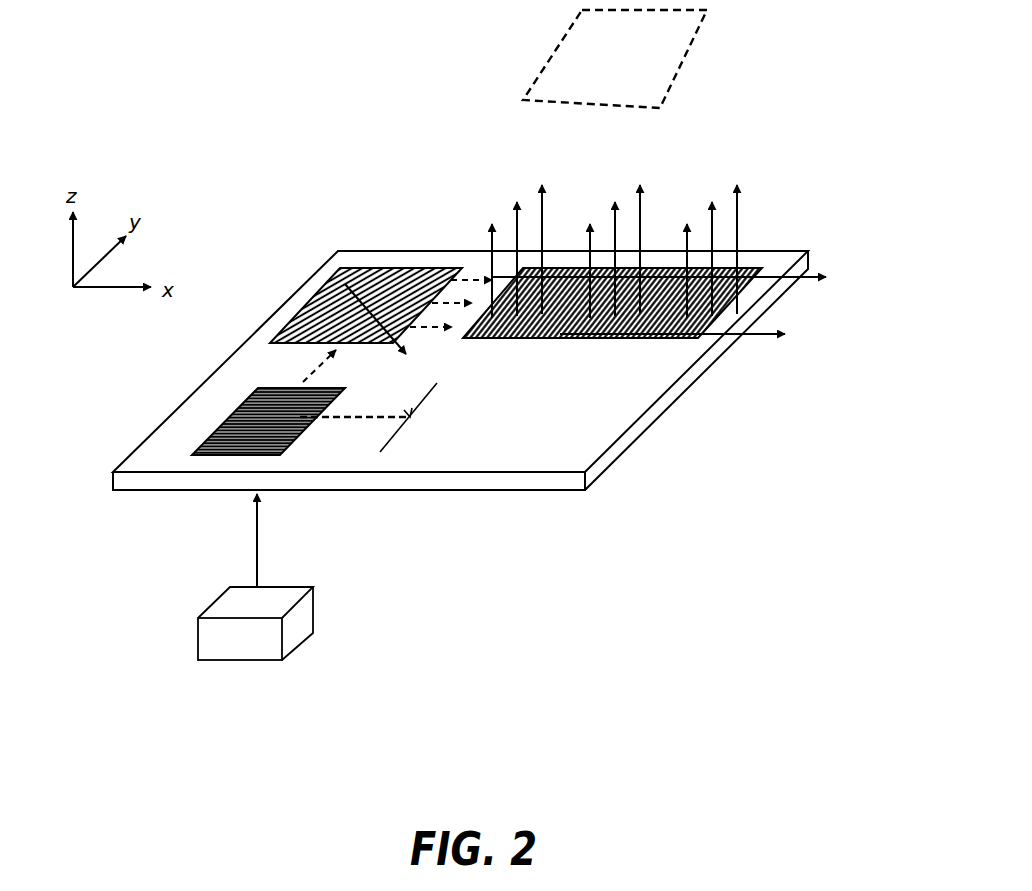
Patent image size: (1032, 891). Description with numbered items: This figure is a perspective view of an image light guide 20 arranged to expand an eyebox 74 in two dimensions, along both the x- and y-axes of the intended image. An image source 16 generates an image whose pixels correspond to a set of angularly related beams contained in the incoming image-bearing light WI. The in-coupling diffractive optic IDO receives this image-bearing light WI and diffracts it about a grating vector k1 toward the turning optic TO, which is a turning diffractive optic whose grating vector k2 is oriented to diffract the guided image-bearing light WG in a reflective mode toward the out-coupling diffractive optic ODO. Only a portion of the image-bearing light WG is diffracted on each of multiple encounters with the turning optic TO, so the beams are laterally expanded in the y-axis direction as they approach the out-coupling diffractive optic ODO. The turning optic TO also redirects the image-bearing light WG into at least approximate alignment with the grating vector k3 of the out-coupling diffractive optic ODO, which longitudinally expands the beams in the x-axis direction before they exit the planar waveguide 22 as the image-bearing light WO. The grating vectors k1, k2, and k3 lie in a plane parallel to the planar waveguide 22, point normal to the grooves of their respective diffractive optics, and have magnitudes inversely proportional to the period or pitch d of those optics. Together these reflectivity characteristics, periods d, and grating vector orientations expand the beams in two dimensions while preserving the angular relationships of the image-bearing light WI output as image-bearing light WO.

The image source 16 is at (198, 638).
The image light guide 20 is at (757, 462).
The planar waveguide 22 is at (553, 490).
The eyebox 74 is at (683, 54).
The in-coupling diffractive optic IDO is at (236, 411).
The turning optic TO is at (338, 266).
The image-bearing light (guided) WG is at (474, 276).
The image-bearing light (output) WO is at (551, 198).
The out-coupling diffractive optic ODO is at (790, 326).
The image-bearing light (input) WI is at (255, 552).
The grating vector k1 is at (304, 366).
The grating vector k2 is at (413, 352).
The grating vector k3 is at (730, 307).
The period or pitch d is at (369, 417).